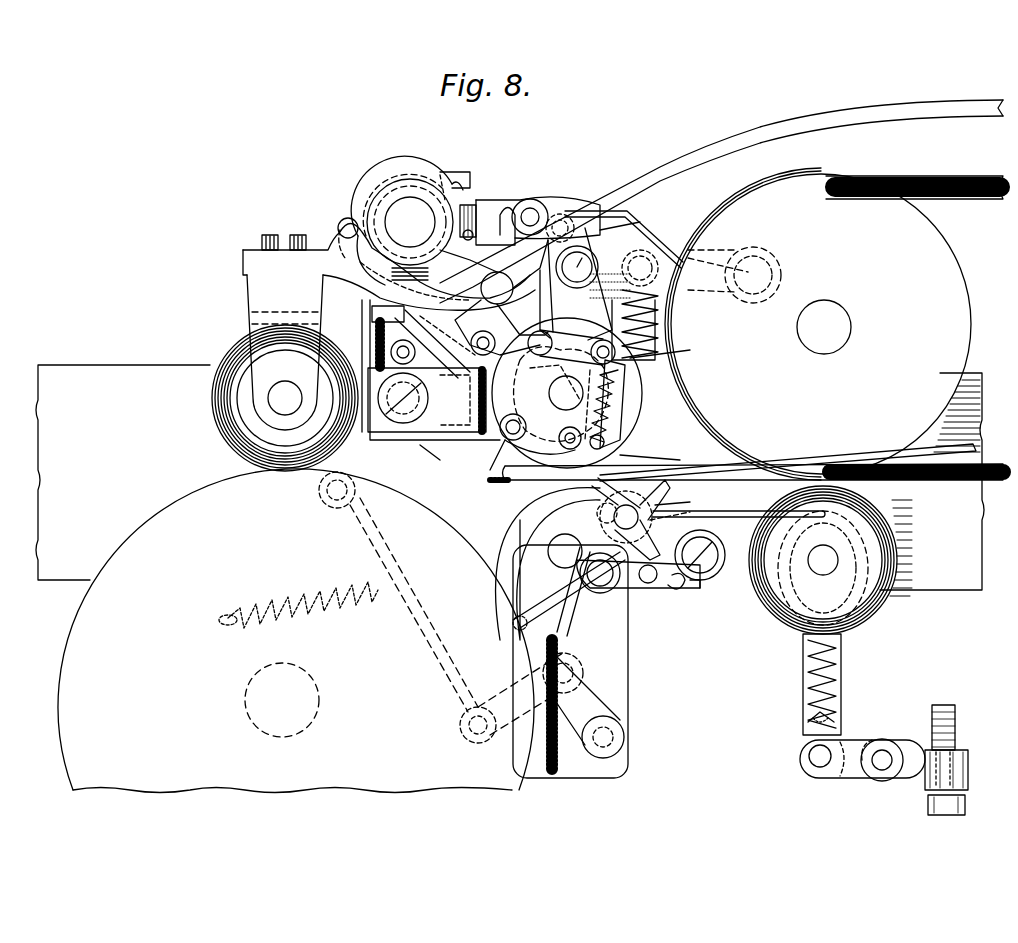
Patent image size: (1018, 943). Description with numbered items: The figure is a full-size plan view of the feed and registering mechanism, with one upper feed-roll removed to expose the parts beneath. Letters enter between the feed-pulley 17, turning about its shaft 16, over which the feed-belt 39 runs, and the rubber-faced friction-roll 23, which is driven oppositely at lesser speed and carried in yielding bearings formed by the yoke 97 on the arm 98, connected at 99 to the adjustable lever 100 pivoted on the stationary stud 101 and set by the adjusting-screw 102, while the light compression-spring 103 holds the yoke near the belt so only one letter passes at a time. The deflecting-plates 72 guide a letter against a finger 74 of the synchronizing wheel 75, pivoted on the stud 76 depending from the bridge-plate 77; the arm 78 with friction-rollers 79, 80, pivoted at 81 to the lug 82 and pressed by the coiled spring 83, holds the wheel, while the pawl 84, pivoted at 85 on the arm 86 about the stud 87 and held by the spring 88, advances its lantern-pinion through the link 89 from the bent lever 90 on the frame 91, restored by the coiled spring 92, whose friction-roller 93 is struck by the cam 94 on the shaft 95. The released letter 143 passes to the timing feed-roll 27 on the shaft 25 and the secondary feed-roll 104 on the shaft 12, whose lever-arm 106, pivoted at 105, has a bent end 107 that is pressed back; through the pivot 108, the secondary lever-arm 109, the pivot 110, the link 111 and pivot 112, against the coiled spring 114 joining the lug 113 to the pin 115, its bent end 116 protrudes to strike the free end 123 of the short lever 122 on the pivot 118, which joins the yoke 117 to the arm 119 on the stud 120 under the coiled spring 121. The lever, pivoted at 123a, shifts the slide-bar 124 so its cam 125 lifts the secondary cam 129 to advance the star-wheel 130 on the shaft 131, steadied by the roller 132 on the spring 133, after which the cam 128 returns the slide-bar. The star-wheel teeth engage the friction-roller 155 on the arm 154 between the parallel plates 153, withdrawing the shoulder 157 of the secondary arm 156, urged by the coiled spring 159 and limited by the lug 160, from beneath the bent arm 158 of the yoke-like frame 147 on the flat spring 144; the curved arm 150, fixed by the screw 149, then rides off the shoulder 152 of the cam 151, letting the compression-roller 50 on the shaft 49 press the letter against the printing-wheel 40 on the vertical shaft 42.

The shaft 12 is at (566, 393).
The shaft 16 is at (845, 328).
The feed-pulley 17 is at (821, 324).
The friction-roll 23 is at (765, 608).
The shaft 25 is at (565, 551).
The timing feed-roll 27 is at (505, 522).
The feed-belt 39 is at (958, 176).
The printing-wheel 40 is at (450, 560).
The vertical shaft 42 is at (320, 702).
The shaft 49 is at (286, 382).
The compression-roller 50 is at (215, 405).
The deflecting-plates 72 is at (810, 460).
The fingers 74 is at (592, 488).
The synchronizing wheel 75 is at (670, 503).
The stud 76 is at (682, 496).
The bridge-plate 77 is at (558, 570).
The arm 78 is at (690, 595).
The friction-roller 79 is at (620, 590).
The friction-roller 80 is at (650, 584).
The pivot 81 is at (708, 572).
The lug 82 is at (735, 525).
The coiled spring 83 is at (680, 590).
The pawl 84 is at (585, 585).
The pivot 85 is at (510, 610).
The arm 86 is at (592, 692).
The stud 87 is at (625, 736).
The spring 88 is at (572, 604).
The link 89 is at (515, 760).
The bent lever 90 is at (348, 366).
The frame 91 is at (355, 480).
The coiled spring 92 is at (292, 600).
The friction-roller 93 is at (338, 222).
The cam 94 is at (400, 175).
The shaft 95 is at (410, 222).
The yoke 97 is at (895, 600).
The arm 98 is at (845, 672).
The connection 99 is at (808, 756).
The adjustable lever 100 is at (840, 780).
The stationary stud 101 is at (883, 750).
The adjusting-screw 102 is at (944, 705).
The compression-spring 103 is at (806, 676).
The secondary feed-roll 104 is at (618, 418).
The pivot 105 is at (498, 458).
The lever-arm 106 is at (505, 482).
The bent end 107 is at (653, 458).
The pivot 108 is at (536, 423).
The secondary lever-arm 109 is at (620, 378).
The pivot 110 is at (567, 393).
The link 111 is at (571, 347).
The pivot 112 is at (503, 348).
The lug 113 is at (690, 356).
The coiled spring 114 is at (620, 400).
The pin 115 is at (606, 442).
The bent end 116 is at (540, 315).
The yoke 117 is at (580, 284).
The pivot 118 is at (590, 258).
The arm 119 is at (660, 305).
The stud 120 is at (740, 250).
The coiled spring 121 is at (660, 330).
The short lever 122 is at (615, 225).
The free end 123 is at (653, 268).
The pivot 123a is at (563, 214).
The slide-bar 124 is at (535, 200).
The cam 125 is at (466, 205).
The cam 128 is at (419, 276).
The secondary cam 129 is at (485, 200).
The star-wheel 130 is at (494, 297).
The shaft 131 is at (497, 288).
The roller 132 is at (522, 200).
The spring 133 is at (678, 250).
The letter 143 is at (942, 482).
The flat spring 144 is at (737, 130).
The yoke-like frame 147 is at (246, 300).
The screw 149 is at (280, 235).
The curved arm 150 is at (362, 196).
The cam 151 is at (438, 170).
The shoulder 152 is at (440, 172).
The parallel plates 153 is at (424, 400).
The arm 154 is at (461, 401).
The friction-roller 155 is at (468, 416).
The secondary arm 156 is at (395, 358).
The shoulder 157 is at (435, 370).
The bent arm 158 is at (389, 314).
The coiled spring 159 is at (435, 342).
The lug 160 is at (415, 284).